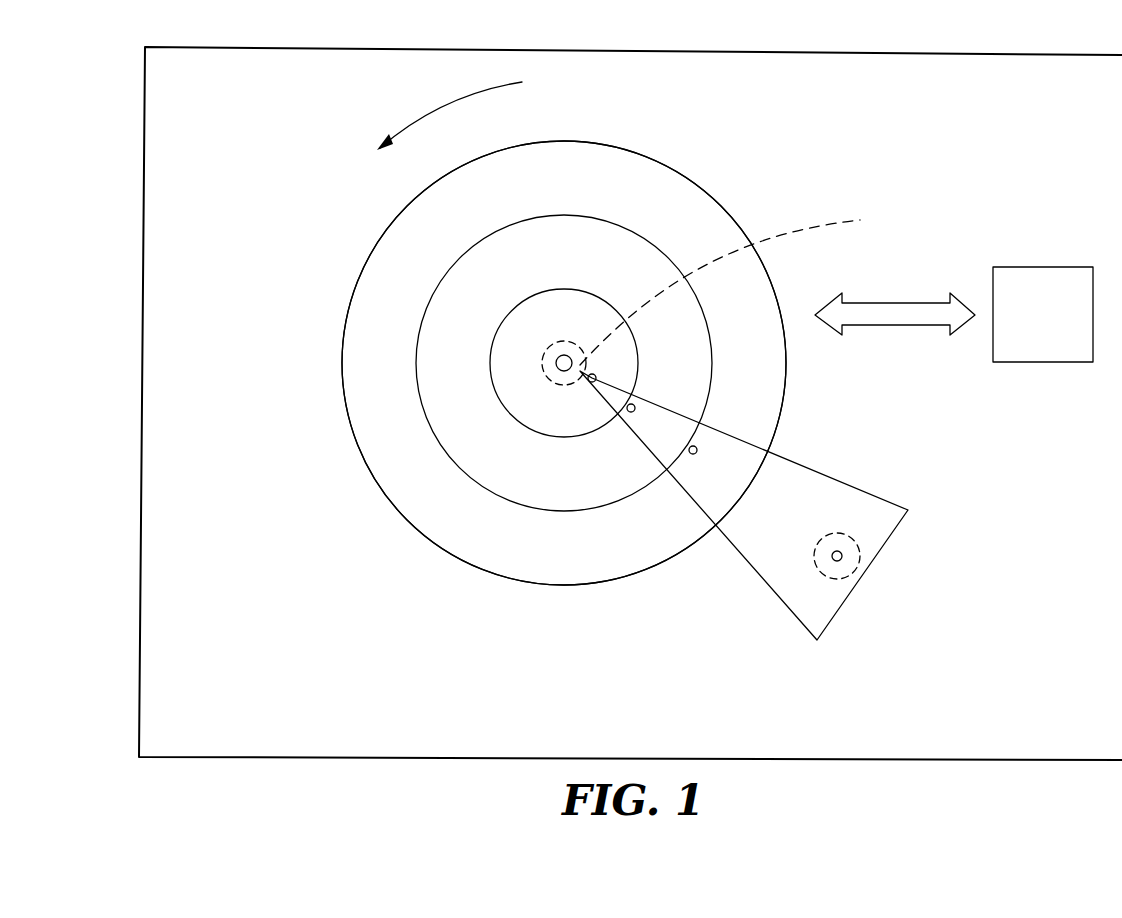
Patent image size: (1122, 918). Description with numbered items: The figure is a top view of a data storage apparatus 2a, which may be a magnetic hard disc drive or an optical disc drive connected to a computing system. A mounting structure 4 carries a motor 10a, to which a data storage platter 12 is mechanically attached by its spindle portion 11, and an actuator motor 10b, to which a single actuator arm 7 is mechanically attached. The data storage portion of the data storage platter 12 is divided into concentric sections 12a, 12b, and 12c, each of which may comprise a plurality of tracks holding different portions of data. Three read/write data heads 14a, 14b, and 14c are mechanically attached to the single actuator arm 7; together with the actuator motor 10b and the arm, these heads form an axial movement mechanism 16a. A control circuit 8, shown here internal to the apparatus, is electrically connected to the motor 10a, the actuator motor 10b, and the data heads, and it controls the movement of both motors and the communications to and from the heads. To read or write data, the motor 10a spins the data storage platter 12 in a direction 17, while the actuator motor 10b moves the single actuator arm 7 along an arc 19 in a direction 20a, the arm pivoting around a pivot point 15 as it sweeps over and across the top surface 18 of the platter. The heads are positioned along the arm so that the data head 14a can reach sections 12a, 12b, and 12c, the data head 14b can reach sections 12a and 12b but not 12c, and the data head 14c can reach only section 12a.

The data storage apparatus 2a is at (112, 103).
The mounting structure 4 is at (142, 362).
The single actuator arm 7 is at (852, 485).
The control circuit 8 is at (1043, 314).
The motor 10a is at (545, 352).
The actuator motor 10b is at (853, 542).
The spindle portion 11 is at (556, 363).
The data storage platter 12 is at (700, 182).
The section 12a is at (566, 180).
The section 12b is at (569, 250).
The section 12c is at (564, 363).
The R/W data head 14a is at (589, 384).
The R/W data head 14b is at (631, 412).
The R/W data head 14c is at (693, 454).
The pivot point 15 is at (843, 556).
The axial movement mechanism 16a is at (832, 418).
The direction 17 is at (418, 120).
The top surface 18 is at (370, 362).
The arc 19 is at (698, 258).
The direction 20a is at (852, 218).